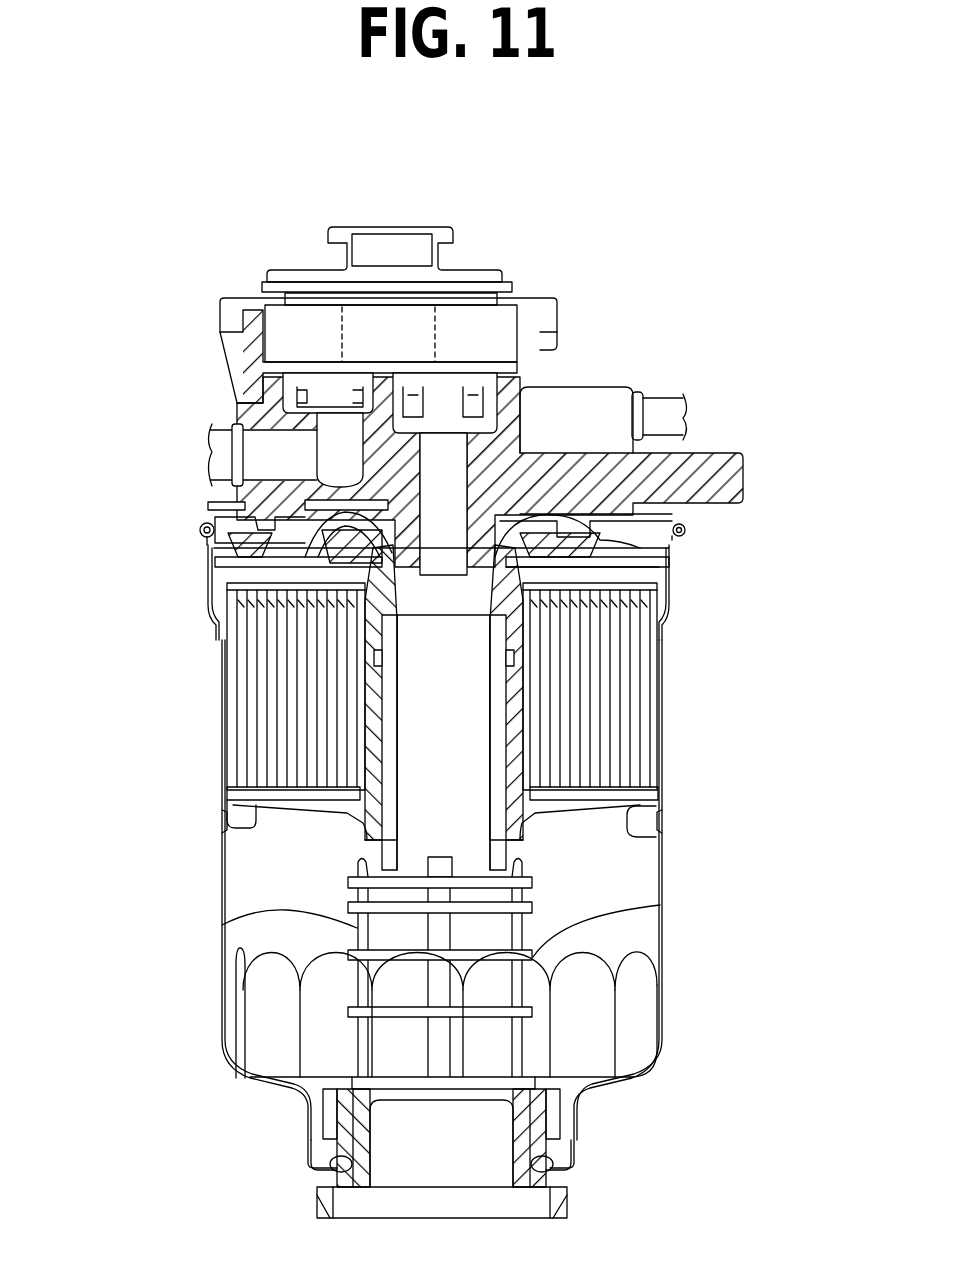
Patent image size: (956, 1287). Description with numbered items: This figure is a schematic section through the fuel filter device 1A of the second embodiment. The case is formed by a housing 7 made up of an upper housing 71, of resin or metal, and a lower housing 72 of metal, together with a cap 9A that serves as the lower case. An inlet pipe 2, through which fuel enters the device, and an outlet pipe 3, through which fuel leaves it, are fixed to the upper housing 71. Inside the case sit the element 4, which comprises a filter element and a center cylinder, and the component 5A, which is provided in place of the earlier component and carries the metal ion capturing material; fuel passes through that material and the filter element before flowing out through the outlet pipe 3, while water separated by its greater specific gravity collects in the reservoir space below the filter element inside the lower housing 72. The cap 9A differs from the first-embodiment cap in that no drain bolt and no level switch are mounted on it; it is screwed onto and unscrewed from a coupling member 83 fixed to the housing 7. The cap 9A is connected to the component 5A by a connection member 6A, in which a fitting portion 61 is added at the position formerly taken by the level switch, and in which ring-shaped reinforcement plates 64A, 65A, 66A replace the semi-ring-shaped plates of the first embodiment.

The fuel filter device 1A is at (425, 666).
The inlet pipe 2 is at (220, 428).
The outlet pipe 3 is at (650, 396).
The element 4 is at (593, 670).
The component 5A is at (455, 740).
The connection member 6A is at (463, 990).
The housing 7 is at (810, 520).
The upper housing 71 is at (670, 475).
The lower housing 72 is at (675, 578).
The fitting portion 61 is at (222, 925).
The ring-shaped reinforcement plate 64A is at (533, 963).
The ring-shaped reinforcement plate 65A is at (533, 1015).
The ring-shaped reinforcement plate 66A is at (523, 1088).
The coupling member 83 is at (573, 1128).
The cap 9A is at (317, 1190).